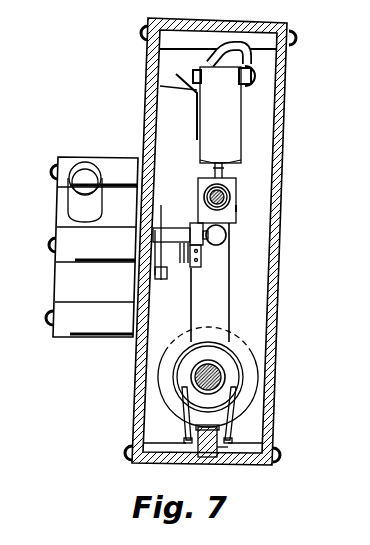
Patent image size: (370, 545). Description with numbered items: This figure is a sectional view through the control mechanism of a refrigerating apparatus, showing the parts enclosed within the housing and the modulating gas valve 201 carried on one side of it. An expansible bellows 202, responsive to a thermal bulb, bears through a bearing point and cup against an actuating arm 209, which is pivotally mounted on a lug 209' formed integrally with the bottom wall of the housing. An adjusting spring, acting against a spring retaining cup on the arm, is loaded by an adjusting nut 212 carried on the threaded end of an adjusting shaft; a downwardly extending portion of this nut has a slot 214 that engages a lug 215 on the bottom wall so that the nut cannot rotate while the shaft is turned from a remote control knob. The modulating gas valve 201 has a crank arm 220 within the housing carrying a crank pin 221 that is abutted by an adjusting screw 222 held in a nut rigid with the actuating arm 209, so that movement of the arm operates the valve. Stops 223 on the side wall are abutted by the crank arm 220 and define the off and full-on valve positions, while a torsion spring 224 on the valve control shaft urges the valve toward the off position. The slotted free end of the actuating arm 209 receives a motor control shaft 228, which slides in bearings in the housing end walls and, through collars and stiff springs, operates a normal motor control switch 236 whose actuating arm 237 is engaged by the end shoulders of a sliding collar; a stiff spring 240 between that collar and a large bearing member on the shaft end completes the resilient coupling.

The modulating gas valve 201 is at (92, 247).
The expansible bellows 202 is at (253, 375).
The actuating arm 209 is at (268, 282).
The lug 209' is at (241, 468).
The adjusting nut 212 is at (183, 380).
The slot 214 is at (197, 402).
The lug 215 is at (204, 445).
The crank arm 220 is at (193, 270).
The crank pin 221 is at (218, 244).
The adjusting screw 222 is at (231, 227).
The stops 223 is at (174, 237).
The torsion spring 224 is at (185, 268).
The motor control shaft 228 is at (231, 192).
The normal motor control switch 236 is at (231, 117).
The actuating arm 237 is at (224, 174).
The stiff spring 240 is at (238, 208).